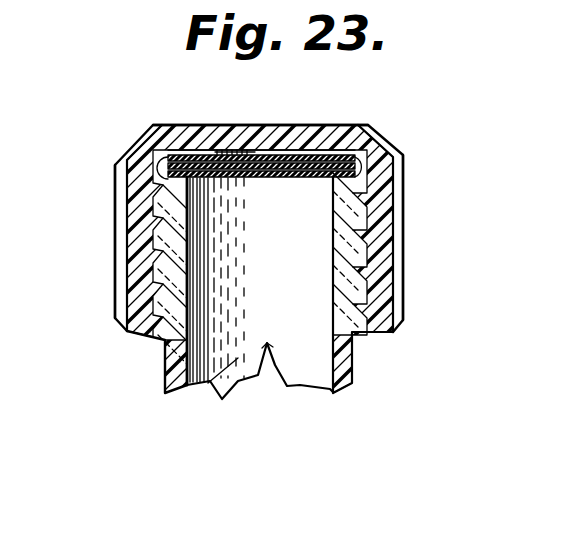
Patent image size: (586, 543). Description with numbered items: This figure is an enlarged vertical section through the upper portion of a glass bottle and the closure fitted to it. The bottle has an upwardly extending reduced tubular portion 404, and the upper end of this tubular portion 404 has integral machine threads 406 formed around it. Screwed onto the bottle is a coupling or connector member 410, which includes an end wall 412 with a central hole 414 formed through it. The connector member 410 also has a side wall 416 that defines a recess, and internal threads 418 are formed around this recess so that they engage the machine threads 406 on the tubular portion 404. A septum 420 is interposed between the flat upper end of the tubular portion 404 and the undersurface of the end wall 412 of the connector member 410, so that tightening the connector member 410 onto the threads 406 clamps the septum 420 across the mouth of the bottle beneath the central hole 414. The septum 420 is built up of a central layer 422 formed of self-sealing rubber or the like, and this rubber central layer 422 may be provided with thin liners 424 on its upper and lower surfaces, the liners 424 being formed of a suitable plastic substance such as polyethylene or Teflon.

The tubular portion 404 is at (353, 383).
The machine threads 406 is at (130, 331).
The coupling or connector member 410 is at (92, 222).
The end wall 412 is at (352, 125).
The central hole 414 is at (288, 150).
The side wall 416 is at (388, 237).
The internal threads 418 is at (347, 253).
The septum 420 is at (265, 183).
The central layer 422 is at (312, 178).
The thin liners 424 is at (210, 179).